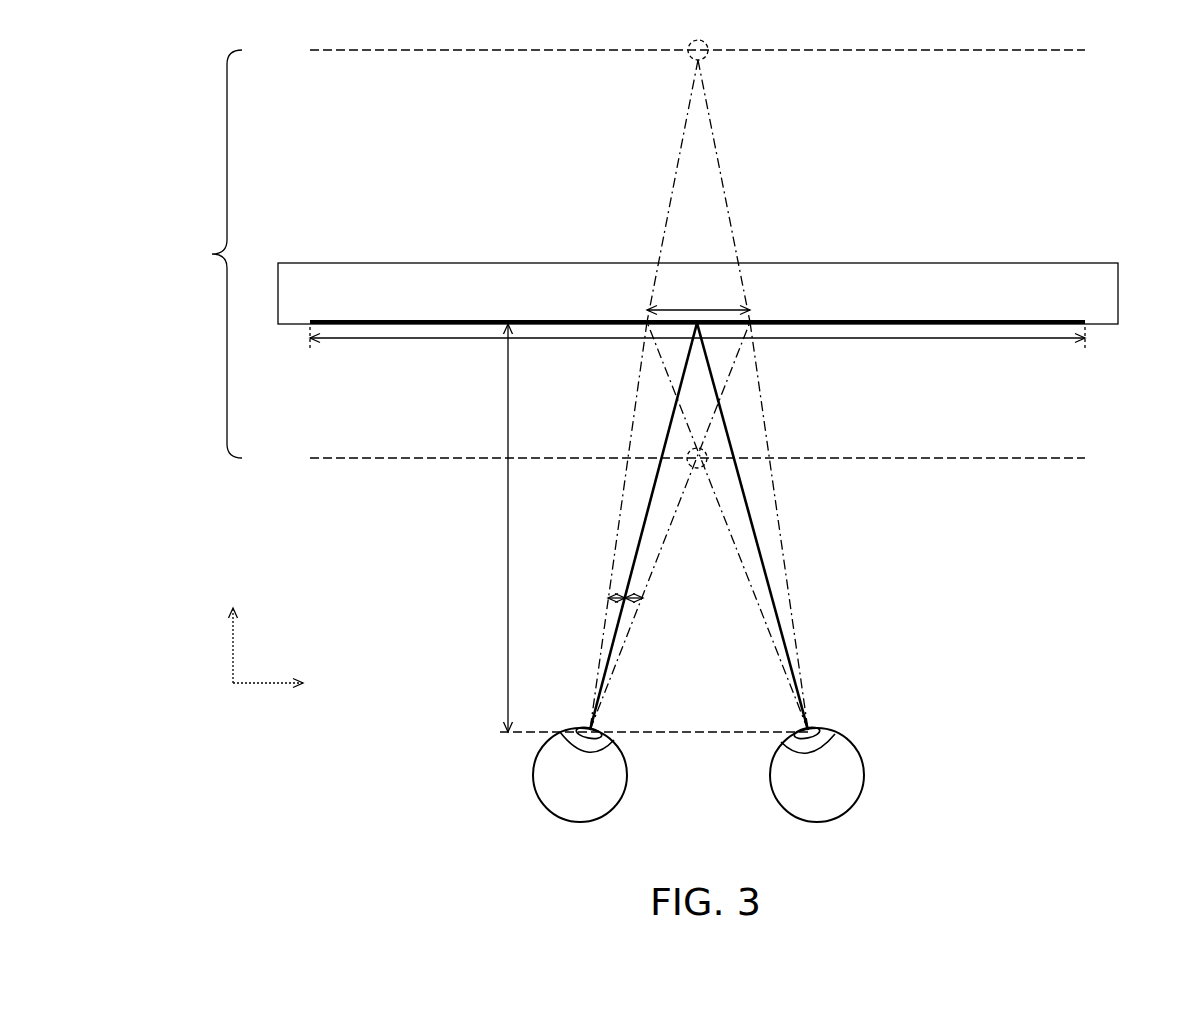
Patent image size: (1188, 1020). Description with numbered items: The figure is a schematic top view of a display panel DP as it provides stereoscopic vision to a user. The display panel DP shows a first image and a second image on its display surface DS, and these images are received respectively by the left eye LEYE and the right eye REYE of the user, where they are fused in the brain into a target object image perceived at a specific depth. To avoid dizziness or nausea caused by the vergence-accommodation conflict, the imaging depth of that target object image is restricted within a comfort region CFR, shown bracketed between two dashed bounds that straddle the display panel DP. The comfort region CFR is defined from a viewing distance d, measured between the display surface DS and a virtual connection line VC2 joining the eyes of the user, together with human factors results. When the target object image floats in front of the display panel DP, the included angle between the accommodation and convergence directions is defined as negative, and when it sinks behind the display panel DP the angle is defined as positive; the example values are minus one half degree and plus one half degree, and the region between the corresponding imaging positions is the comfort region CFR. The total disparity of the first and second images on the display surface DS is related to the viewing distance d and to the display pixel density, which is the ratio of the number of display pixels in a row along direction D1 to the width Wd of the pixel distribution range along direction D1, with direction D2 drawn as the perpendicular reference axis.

The comfort region CFR is at (196, 254).
The display panel DP is at (1103, 290).
The display surface DS is at (1040, 332).
The width of a distribution range of the display pixels Wd is at (963, 340).
The total disparity Pd is at (699, 308).
The viewing distance d is at (496, 528).
The virtual connection line VC2 is at (713, 733).
The left eye LEYE is at (547, 783).
The right eye REYE is at (843, 780).
The direction D1 is at (291, 683).
The direction D2 is at (237, 629).